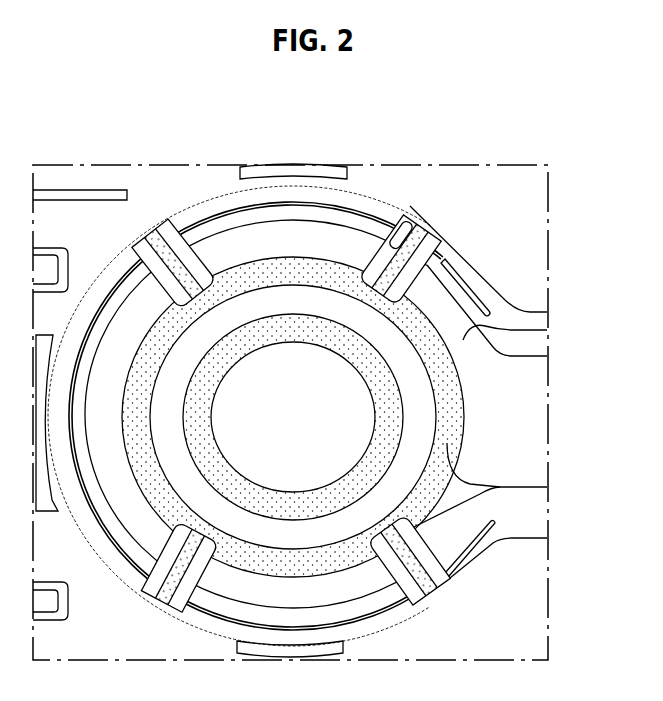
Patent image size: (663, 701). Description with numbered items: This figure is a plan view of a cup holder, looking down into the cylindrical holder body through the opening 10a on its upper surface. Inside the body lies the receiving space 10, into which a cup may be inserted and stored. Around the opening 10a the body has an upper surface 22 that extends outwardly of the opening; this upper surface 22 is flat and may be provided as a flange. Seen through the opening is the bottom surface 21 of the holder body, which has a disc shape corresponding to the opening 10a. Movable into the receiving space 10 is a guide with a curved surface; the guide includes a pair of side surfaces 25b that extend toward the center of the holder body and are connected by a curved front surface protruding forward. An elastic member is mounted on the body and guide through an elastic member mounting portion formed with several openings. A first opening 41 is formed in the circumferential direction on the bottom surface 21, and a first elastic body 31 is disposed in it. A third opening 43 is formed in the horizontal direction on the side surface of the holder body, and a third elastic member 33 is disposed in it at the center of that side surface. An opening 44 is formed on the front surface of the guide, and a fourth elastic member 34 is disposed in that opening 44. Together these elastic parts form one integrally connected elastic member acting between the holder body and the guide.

The receiving space 10 is at (305, 424).
The opening 10a is at (212, 215).
The bottom surface 21 is at (547, 330).
The upper surface 22 is at (88, 218).
The side surfaces 25b is at (440, 262).
The first elastic body 31 is at (457, 405).
The third elastic member 33 is at (338, 207).
The fourth elastic member 34 is at (425, 223).
The first opening 41 is at (513, 488).
The third opening 43 is at (270, 207).
The opening 44 is at (392, 208).